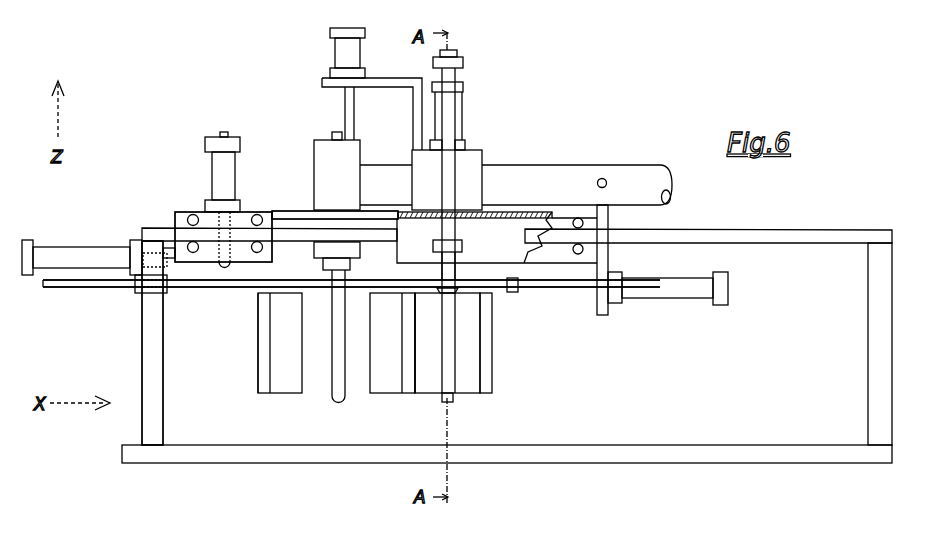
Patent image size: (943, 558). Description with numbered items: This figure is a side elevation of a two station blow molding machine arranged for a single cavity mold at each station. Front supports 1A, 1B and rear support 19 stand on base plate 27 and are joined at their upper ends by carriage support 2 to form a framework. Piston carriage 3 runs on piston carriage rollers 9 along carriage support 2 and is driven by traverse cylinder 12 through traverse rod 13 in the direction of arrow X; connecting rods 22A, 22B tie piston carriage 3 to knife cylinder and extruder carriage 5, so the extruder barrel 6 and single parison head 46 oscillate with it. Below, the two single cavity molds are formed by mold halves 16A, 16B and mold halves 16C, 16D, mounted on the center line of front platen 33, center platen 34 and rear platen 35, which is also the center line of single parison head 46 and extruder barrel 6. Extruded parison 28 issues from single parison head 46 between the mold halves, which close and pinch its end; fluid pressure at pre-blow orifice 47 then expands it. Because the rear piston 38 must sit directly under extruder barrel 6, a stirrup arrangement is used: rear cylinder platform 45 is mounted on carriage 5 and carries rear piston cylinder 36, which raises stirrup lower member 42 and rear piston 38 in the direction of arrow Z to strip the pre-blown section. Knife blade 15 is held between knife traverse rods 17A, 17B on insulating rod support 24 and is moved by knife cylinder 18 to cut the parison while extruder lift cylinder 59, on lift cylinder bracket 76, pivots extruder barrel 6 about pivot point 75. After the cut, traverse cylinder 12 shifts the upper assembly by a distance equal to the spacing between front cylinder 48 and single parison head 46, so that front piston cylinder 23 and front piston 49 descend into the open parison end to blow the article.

The front support 1A is at (150, 398).
The front support 1B is at (110, 353).
The carriage support 2 is at (801, 236).
The piston carriage 3 is at (180, 221).
The knife cylinder and extruder carriage 5 is at (600, 227).
The extruder barrel 6 is at (641, 173).
The piston carriage roller 9 is at (182, 221).
The traverse cylinder 12 is at (87, 263).
The traverse rod 13 is at (160, 276).
The knife blade 15 is at (301, 296).
The mold half 16A is at (297, 386).
The mold half 16B is at (388, 390).
The mold half 16C is at (443, 368).
The mold half 16D is at (473, 389).
The knife traverse rod 17A is at (488, 287).
The knife traverse rod 17B is at (364, 402).
The knife cylinder 18 is at (674, 292).
The rear support 19 is at (880, 258).
The connecting rod 22A is at (290, 216).
The connecting rod 22B is at (288, 379).
The front piston cylinder 23 is at (220, 172).
The rod support 24 is at (514, 293).
The base plate 27 is at (810, 458).
The extruded parison 28 is at (339, 400).
The front platen 33 is at (263, 377).
The center platen 34 is at (410, 389).
The rear platen 35 is at (489, 371).
The rear piston cylinder 36 is at (458, 99).
The rear piston 38 is at (448, 267).
The stirrup lower member 42 is at (459, 243).
The rear cylinder platform 45 is at (472, 158).
The single parison head 46 is at (321, 173).
The pre-blow orifice 47 is at (336, 131).
The front cylinder 48 is at (223, 131).
The front piston 49 is at (221, 268).
The extruder lift cylinder 59 is at (345, 33).
The pivot point 75 is at (606, 180).
The lift cylinder bracket 76 is at (330, 81).